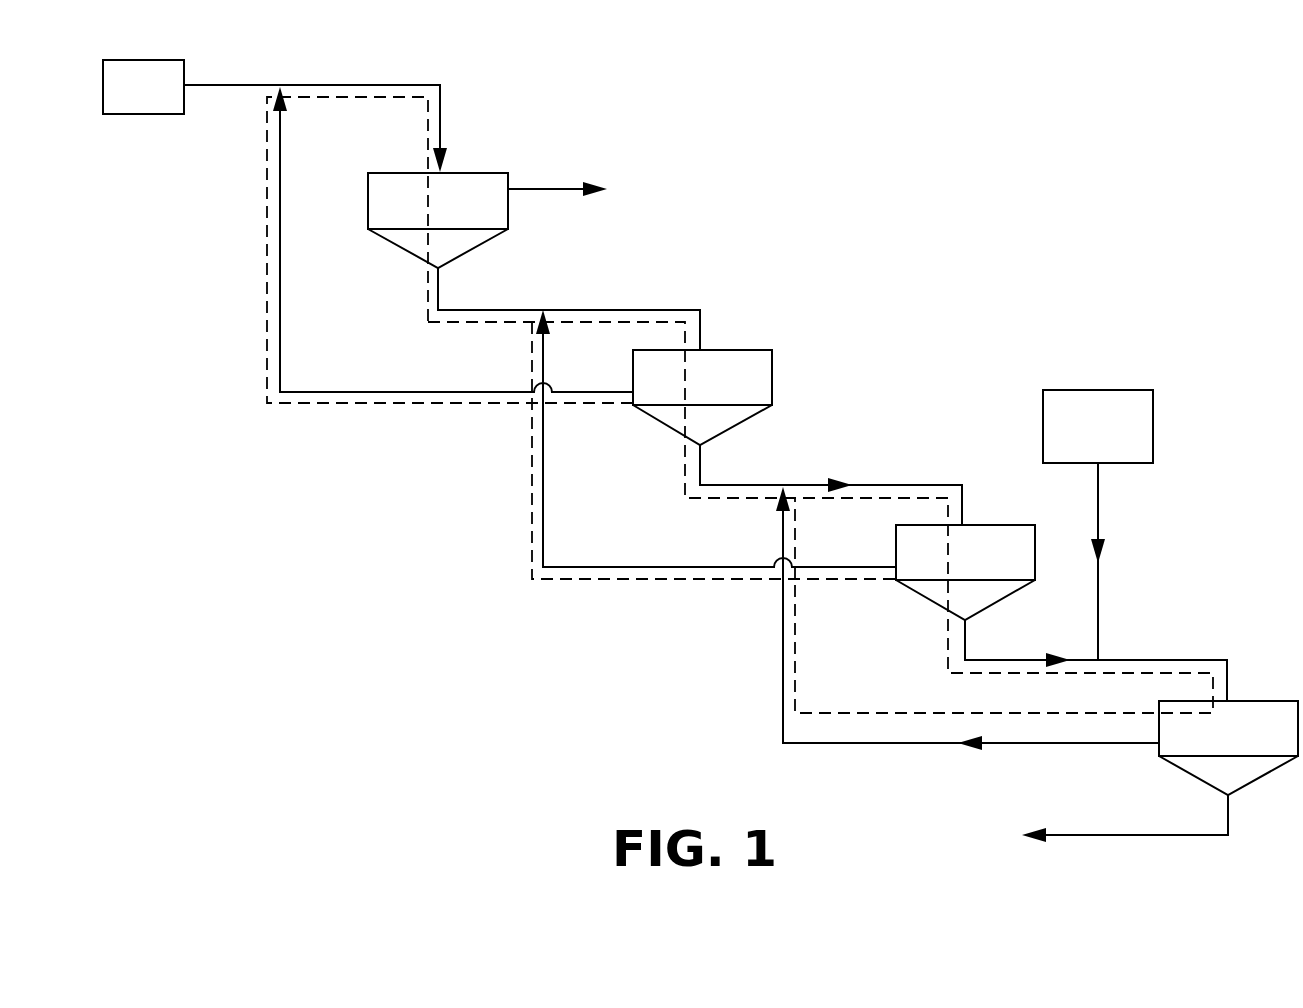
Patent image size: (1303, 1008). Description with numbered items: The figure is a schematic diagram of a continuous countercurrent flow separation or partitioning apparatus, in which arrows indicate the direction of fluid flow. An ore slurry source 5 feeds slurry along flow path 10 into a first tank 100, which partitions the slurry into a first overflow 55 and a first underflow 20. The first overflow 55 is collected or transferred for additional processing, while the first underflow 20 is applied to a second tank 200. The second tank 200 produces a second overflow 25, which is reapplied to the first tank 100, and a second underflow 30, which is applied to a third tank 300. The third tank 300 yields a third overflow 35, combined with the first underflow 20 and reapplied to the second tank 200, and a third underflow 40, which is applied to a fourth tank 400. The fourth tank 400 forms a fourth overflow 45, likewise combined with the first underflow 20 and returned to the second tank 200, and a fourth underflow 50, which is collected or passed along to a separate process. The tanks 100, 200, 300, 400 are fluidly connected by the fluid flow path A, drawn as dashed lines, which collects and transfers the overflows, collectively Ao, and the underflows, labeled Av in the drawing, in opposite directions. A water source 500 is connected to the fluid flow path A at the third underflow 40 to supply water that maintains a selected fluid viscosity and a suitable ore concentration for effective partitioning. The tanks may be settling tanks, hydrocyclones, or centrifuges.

The ore slurry source 5 is at (143, 87).
The flow path 10 is at (401, 84).
The first tank 100 is at (438, 220).
The first overflow 55 is at (560, 188).
The first underflow 20 is at (672, 309).
The second tank 200 is at (702, 397).
The second overflow 25 is at (340, 394).
The second underflow 30 is at (935, 484).
The third tank 300 is at (965, 572).
The third overflow 35 is at (601, 581).
The third underflow 40 is at (1160, 659).
The fourth tank 400 is at (1228, 748).
The fourth overflow 45 is at (866, 745).
The fourth underflow 50 is at (1109, 837).
The water source 500 is at (1098, 525).
The fluid flow path A is at (266, 200).
The vapor/overflow stream path Av is at (598, 321).
The overflows Ao is at (411, 405).